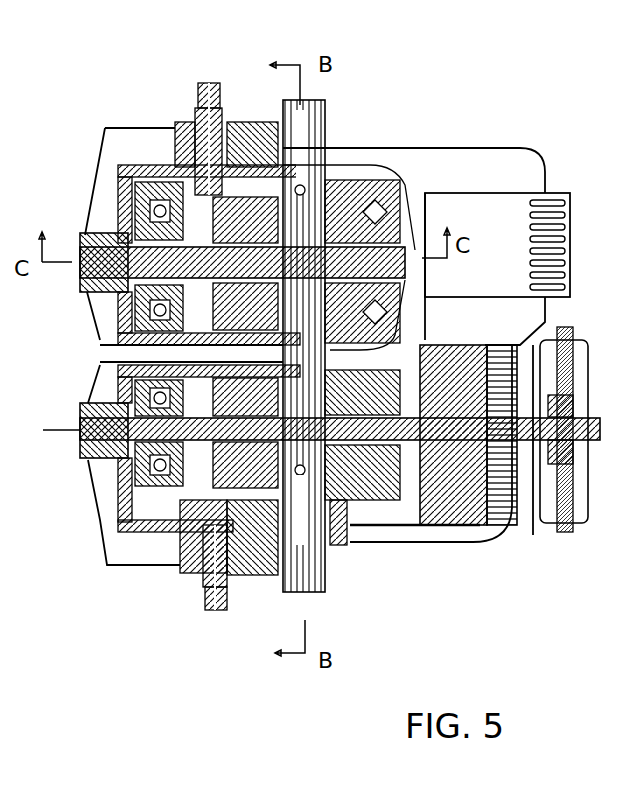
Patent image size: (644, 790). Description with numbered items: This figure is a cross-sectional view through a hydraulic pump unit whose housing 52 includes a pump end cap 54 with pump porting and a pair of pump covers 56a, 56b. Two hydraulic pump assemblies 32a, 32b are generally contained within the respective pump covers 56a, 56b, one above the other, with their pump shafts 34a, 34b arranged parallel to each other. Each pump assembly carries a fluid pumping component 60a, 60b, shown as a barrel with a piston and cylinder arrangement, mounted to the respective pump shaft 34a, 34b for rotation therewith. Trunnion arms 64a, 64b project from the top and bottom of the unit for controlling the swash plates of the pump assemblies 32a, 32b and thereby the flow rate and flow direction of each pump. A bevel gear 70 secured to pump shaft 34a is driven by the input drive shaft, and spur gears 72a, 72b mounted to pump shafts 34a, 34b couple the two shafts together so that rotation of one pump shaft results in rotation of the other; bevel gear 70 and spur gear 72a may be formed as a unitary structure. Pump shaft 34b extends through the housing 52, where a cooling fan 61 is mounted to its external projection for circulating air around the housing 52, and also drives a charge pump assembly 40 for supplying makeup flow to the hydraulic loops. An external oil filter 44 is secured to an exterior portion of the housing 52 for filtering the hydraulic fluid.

The hydraulic pump assembly 32a is at (76, 225).
The hydraulic pump assembly 32b is at (85, 480).
The pump shaft 34a is at (422, 193).
The pump shaft 34b is at (536, 538).
The charge pump assembly 40 is at (458, 528).
The oil filter 44 is at (572, 203).
The housing 52 is at (130, 108).
The pump end cap 54 is at (336, 557).
The pump cover 56a is at (120, 170).
The pump cover 56b is at (98, 398).
The fluid pumping component 60a is at (243, 168).
The fluid pumping component 60b is at (268, 578).
The cooling fan 61 is at (584, 440).
The trunnion arm 64a is at (240, 66).
The trunnion arm 64b is at (215, 612).
The bevel gear 70 is at (422, 190).
The spur gear 72a is at (350, 180).
The spur gear 72b is at (350, 352).